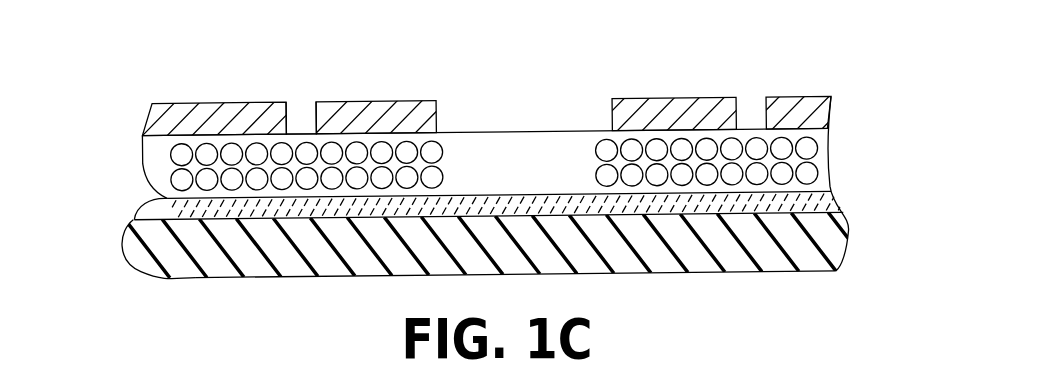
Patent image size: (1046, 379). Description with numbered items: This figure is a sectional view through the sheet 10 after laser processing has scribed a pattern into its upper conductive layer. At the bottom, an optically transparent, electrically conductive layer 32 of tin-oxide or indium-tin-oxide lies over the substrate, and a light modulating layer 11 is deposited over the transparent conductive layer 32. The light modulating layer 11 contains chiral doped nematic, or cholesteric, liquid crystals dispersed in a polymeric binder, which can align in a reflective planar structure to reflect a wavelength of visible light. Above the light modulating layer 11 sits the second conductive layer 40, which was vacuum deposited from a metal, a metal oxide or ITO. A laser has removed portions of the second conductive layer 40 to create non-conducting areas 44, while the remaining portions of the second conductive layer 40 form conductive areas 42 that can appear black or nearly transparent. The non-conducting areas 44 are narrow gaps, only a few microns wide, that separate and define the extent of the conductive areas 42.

The sheet 10 is at (716, 79).
The light modulating layer 11 is at (155, 156).
The transparent, electrically conductive layer 32 is at (146, 199).
The second conductive layer 40 is at (462, 78).
The conductive areas 42 is at (204, 107).
The non-conducting areas 44 is at (303, 115).